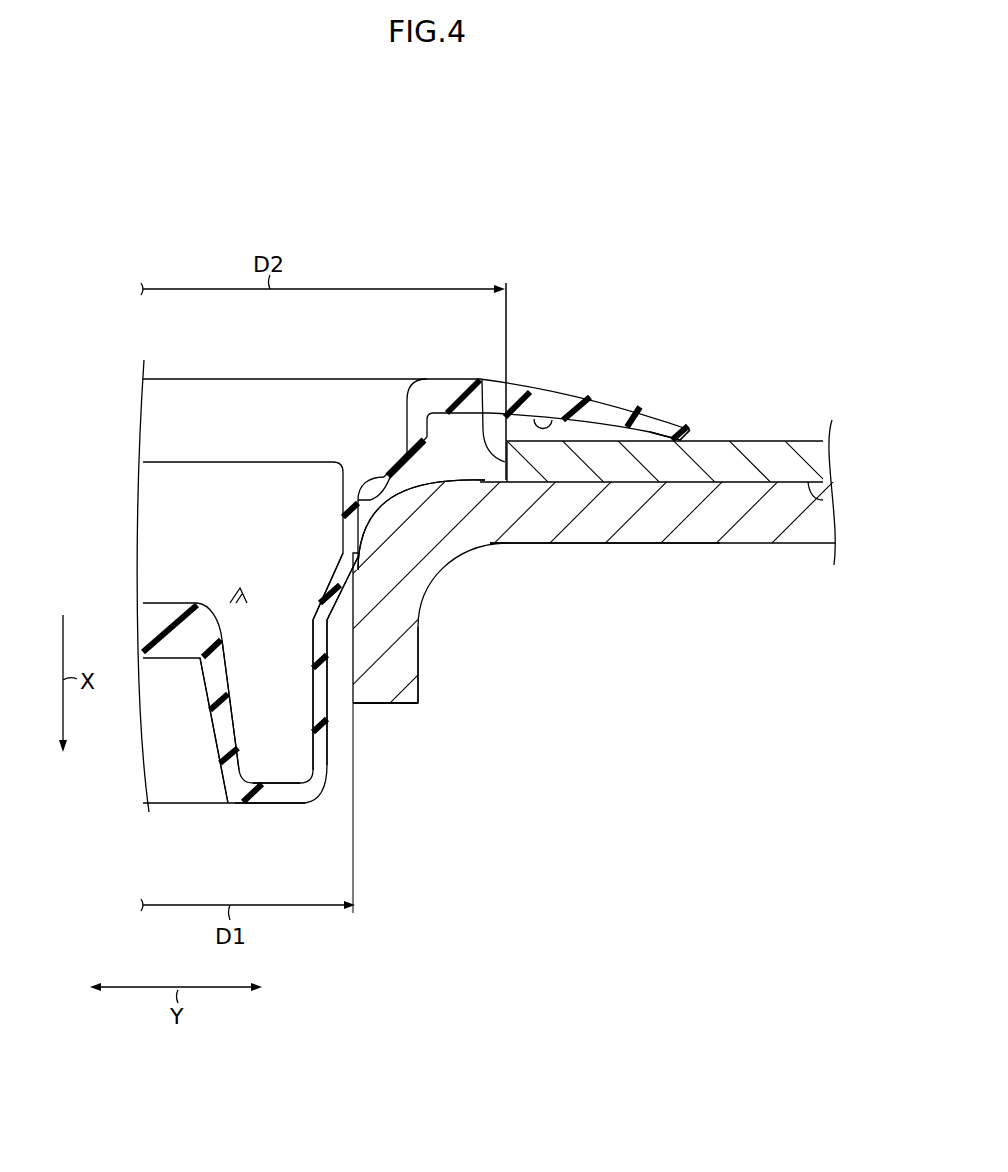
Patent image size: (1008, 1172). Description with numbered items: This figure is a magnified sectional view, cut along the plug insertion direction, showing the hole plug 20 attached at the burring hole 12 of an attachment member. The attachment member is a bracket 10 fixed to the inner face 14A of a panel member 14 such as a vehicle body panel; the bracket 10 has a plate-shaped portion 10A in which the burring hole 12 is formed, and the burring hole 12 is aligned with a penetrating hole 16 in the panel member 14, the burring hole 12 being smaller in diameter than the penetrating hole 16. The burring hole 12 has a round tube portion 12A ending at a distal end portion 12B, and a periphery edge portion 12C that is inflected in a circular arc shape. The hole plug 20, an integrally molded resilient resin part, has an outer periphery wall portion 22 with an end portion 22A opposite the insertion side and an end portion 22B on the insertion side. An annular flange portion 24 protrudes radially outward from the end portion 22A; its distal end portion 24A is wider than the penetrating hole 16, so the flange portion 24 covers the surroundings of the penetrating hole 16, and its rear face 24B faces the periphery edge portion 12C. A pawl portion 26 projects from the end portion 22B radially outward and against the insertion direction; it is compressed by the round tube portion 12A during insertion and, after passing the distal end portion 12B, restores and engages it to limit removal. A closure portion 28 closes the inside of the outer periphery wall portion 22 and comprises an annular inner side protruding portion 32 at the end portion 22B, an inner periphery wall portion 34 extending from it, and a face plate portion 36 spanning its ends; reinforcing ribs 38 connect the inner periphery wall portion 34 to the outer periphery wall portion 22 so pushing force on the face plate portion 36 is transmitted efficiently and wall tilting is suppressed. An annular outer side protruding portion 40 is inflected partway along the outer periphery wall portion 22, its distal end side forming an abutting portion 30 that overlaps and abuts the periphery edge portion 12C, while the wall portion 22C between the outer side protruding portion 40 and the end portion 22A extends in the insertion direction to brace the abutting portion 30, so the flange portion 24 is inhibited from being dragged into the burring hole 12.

The bracket 10 is at (740, 555).
The plate-shaped portion 10A is at (640, 543).
The burring hole 12 is at (340, 648).
The round tube portion 12A is at (420, 700).
The distal end portion 12B is at (393, 705).
The periphery edge portion 12C is at (430, 560).
The panel member 14 is at (748, 441).
The inner face 14A is at (838, 420).
The penetrating hole 16 is at (482, 380).
The hole plug 20 is at (517, 252).
The outer periphery wall portion 22 is at (364, 527).
The end portion 22A is at (413, 380).
The end portion 22B is at (313, 803).
The wall portion 22C is at (490, 540).
The flange portion 24 is at (613, 388).
The distal end portion 24A is at (695, 440).
The rear face 24B is at (553, 419).
The pawl portion 26 is at (378, 717).
The closure portion 28 is at (183, 583).
The abutting portion 30 is at (488, 535).
The inner side protruding portion 32 is at (270, 806).
The inner periphery wall portion 34 is at (207, 737).
The face plate portion 36 is at (160, 580).
The reinforcing ribs 38 is at (276, 590).
The outer side protruding portion 40 is at (358, 497).